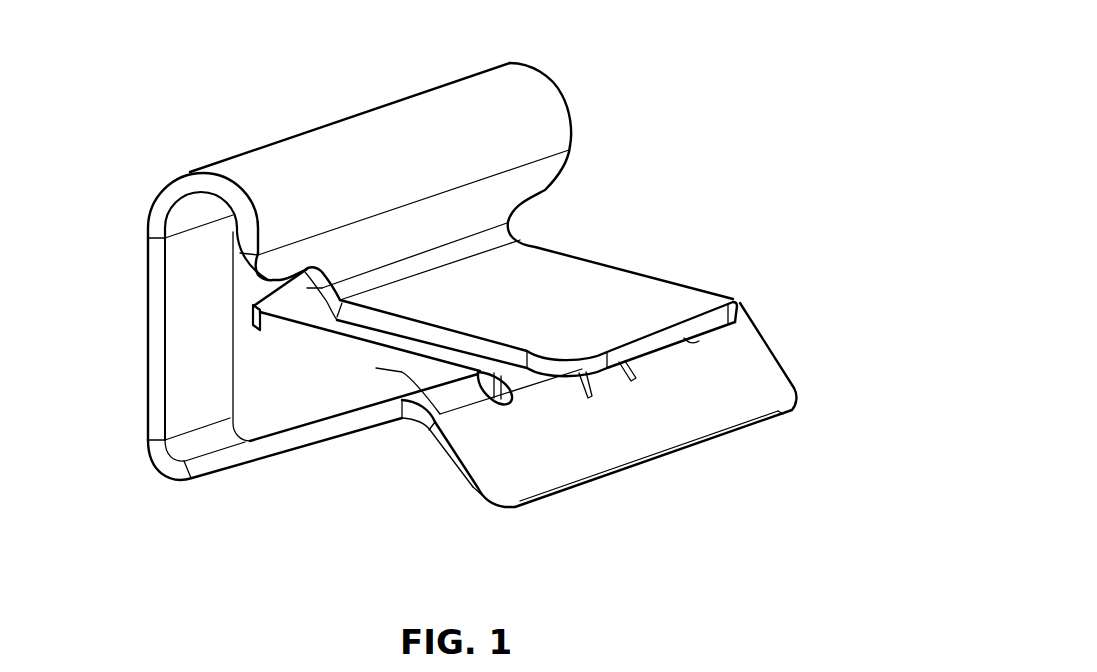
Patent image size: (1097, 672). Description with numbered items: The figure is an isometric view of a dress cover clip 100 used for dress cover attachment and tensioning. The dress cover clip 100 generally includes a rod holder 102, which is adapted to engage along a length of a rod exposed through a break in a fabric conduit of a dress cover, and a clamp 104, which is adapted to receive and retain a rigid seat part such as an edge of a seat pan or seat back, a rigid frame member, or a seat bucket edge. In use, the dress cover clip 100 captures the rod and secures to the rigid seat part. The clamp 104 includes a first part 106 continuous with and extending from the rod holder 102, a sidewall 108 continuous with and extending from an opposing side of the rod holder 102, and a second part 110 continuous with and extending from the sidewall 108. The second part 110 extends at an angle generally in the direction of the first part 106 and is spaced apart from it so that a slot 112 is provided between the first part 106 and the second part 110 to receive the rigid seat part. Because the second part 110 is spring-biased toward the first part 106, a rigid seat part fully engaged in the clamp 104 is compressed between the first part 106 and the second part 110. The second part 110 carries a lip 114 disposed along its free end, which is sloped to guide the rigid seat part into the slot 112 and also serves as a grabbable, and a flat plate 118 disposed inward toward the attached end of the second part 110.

The dress cover clip 100 is at (661, 53).
The rod holder 102 is at (351, 133).
The clamp 104 is at (416, 435).
The first part 106 is at (643, 290).
The sidewall 108 is at (181, 358).
The second part 110 is at (264, 450).
The slot 112 is at (663, 358).
The lip 114 is at (620, 437).
The flat plate 118 is at (335, 343).